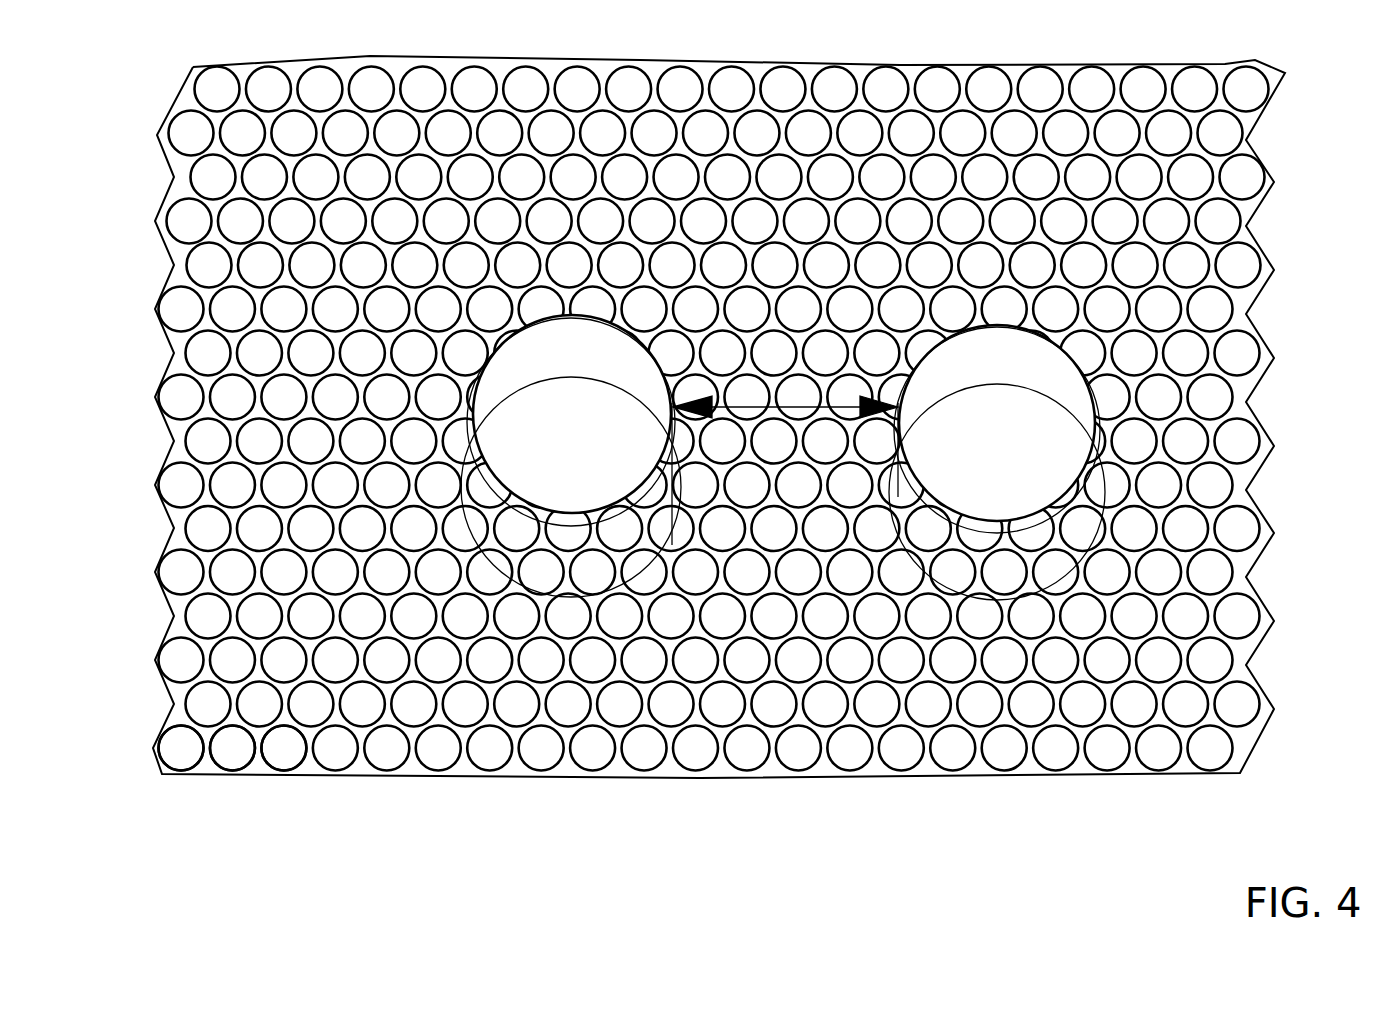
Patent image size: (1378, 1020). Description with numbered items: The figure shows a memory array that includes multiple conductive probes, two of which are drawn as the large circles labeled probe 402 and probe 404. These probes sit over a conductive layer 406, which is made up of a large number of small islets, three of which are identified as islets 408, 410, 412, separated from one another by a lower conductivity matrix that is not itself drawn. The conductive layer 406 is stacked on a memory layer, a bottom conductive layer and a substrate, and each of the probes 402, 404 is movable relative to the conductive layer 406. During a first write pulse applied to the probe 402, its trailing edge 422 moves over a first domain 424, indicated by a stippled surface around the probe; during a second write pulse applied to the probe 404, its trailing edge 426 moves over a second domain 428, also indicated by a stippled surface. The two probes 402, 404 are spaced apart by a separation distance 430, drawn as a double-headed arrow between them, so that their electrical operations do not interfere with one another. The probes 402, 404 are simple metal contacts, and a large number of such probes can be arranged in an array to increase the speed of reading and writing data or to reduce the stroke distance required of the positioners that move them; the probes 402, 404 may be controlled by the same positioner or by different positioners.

The conductive probe 402 is at (596, 425).
The conductive probe 404 is at (980, 437).
The conductive layer 406 is at (916, 780).
The islet 408 is at (178, 775).
The islet 410 is at (282, 775).
The islet 412 is at (227, 775).
The trailing edge 422 is at (463, 492).
The first domain 424 is at (482, 568).
The trailing edge 426 is at (895, 509).
The second domain 428 is at (900, 597).
The separation distance 430 is at (835, 425).